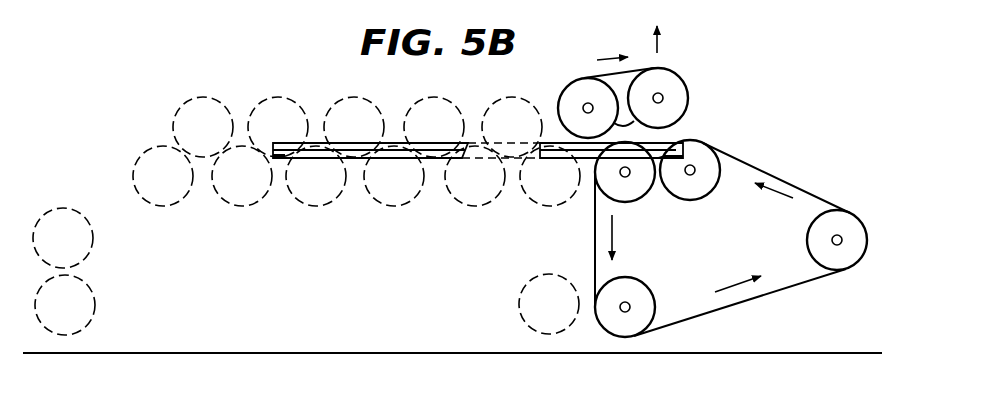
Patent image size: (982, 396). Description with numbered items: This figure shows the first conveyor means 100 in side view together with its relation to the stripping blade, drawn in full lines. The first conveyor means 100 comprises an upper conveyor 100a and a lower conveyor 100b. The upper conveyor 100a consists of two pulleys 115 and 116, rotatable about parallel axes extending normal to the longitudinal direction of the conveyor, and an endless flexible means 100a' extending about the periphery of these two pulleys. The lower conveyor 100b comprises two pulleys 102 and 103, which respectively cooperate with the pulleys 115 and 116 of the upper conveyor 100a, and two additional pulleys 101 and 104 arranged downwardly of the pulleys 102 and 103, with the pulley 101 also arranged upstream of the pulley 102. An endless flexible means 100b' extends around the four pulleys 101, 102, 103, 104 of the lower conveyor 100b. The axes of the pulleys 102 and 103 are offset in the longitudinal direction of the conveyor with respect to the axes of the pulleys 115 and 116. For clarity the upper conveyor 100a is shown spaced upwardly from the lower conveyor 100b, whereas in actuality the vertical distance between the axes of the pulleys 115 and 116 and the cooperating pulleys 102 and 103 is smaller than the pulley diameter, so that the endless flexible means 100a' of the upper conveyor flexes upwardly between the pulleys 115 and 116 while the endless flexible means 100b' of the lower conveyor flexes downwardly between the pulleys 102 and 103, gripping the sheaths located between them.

The first conveyor means 100 is at (689, 129).
The upper conveyor 100a is at (664, 45).
The endless flexible means 100a' is at (673, 91).
The lower conveyor 100b is at (731, 216).
The endless flexible means 100b' is at (740, 302).
The pulley 101 is at (888, 197).
The pulley 102 is at (700, 183).
The pulley 103 is at (635, 192).
The pulley 104 is at (638, 290).
The pulley 115 is at (650, 80).
The pulley 116 is at (570, 90).